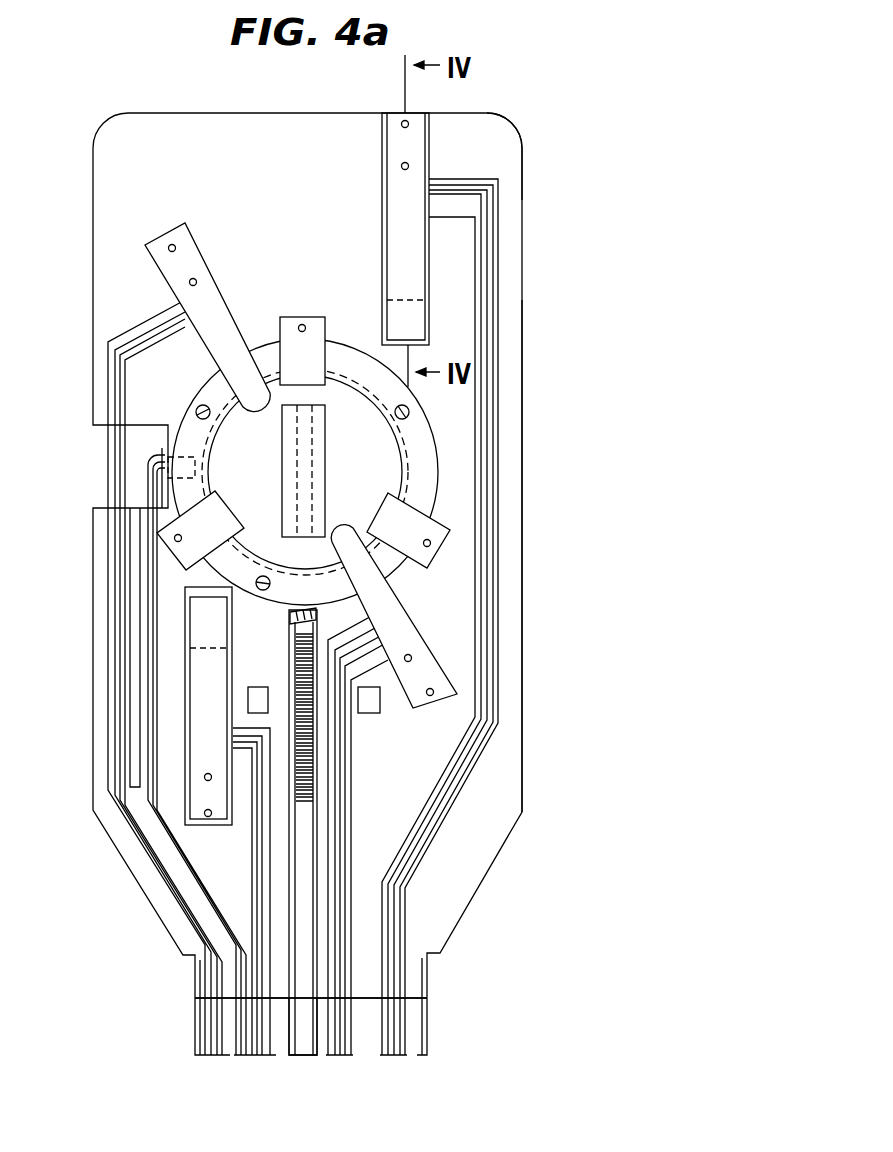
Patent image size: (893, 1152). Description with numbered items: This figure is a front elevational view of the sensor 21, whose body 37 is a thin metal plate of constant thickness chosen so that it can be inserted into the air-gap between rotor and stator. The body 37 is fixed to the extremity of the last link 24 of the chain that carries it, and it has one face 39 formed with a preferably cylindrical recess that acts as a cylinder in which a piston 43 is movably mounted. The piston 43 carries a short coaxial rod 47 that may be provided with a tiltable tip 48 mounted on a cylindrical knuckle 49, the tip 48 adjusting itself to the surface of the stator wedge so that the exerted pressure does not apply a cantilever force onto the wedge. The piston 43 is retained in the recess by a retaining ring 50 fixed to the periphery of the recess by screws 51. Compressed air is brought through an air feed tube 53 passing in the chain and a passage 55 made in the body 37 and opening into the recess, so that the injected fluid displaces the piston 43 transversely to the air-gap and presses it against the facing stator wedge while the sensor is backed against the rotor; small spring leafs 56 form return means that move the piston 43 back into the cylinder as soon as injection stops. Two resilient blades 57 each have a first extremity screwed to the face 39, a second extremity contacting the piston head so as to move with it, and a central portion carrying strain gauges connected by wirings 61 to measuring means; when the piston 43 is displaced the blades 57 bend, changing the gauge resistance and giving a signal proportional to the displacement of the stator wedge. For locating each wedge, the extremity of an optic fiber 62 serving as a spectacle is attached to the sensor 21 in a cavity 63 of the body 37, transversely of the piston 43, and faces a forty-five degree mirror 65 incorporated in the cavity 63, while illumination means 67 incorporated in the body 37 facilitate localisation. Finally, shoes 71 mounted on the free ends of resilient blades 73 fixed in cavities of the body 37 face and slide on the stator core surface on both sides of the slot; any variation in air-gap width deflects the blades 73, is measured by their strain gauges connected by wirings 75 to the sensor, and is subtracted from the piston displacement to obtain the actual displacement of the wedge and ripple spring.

The sensor 21 is at (533, 623).
The last link of the chain 24 is at (428, 1008).
The body 37 is at (525, 392).
The face 39 is at (495, 150).
The piston 43 is at (249, 419).
The coaxial rod 47 is at (263, 490).
The tiltable tip 48 is at (317, 436).
The cylindrical knuckle 49 is at (305, 485).
The retaining ring 50 is at (347, 360).
The screws 51 is at (410, 412).
The air feed tube 53 is at (243, 1058).
The passage 55 is at (198, 466).
The spring leafs 56 is at (432, 548).
The resilient blades 57 is at (413, 642).
The wirings 61 is at (345, 1058).
The optic fiber 62 is at (308, 1058).
The cavity 63 is at (318, 816).
The 45° mirror 65 is at (290, 614).
The illumination means 67 is at (375, 714).
The shoes 71 is at (198, 622).
The resilient blades 73 is at (195, 665).
The wirings 75 is at (268, 1056).